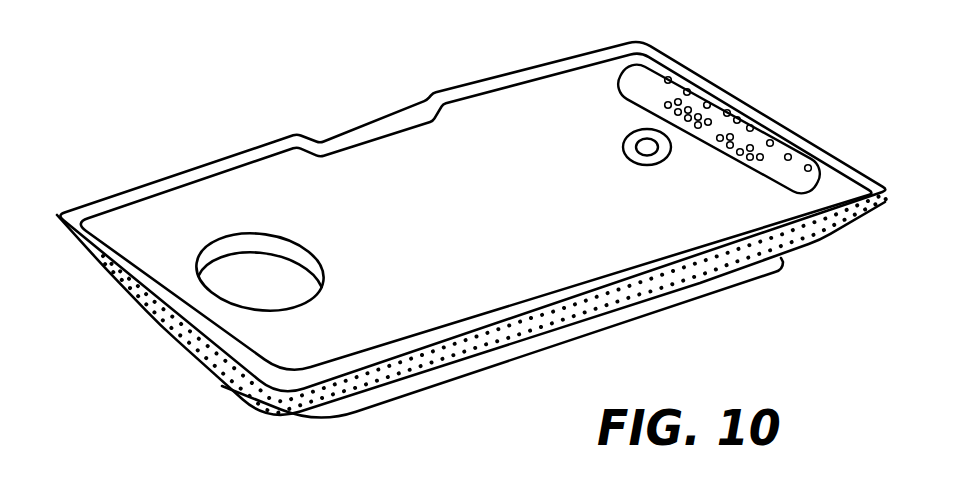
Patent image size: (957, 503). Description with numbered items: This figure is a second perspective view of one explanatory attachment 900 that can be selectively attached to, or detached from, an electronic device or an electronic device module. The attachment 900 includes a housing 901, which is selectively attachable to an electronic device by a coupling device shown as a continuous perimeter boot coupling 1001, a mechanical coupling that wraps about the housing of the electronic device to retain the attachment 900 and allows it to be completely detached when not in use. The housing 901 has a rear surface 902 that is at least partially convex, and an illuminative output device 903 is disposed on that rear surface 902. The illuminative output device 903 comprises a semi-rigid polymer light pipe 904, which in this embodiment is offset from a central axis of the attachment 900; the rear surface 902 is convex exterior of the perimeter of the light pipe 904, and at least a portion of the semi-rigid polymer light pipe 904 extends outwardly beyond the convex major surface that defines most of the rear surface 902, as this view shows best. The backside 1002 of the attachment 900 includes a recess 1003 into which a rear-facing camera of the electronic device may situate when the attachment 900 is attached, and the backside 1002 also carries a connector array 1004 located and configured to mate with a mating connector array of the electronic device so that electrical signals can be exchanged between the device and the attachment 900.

The attachment 900 is at (224, 130).
The housing 901 is at (538, 87).
The rear surface 902 is at (160, 332).
The illuminative output device 903 is at (387, 415).
The semi-rigid polymer light pipe 904 is at (652, 307).
The continuous perimeter boot coupling 1001 is at (133, 187).
The backside 1002 is at (557, 182).
The recess 1003 is at (277, 247).
The connector array 1004 is at (723, 160).